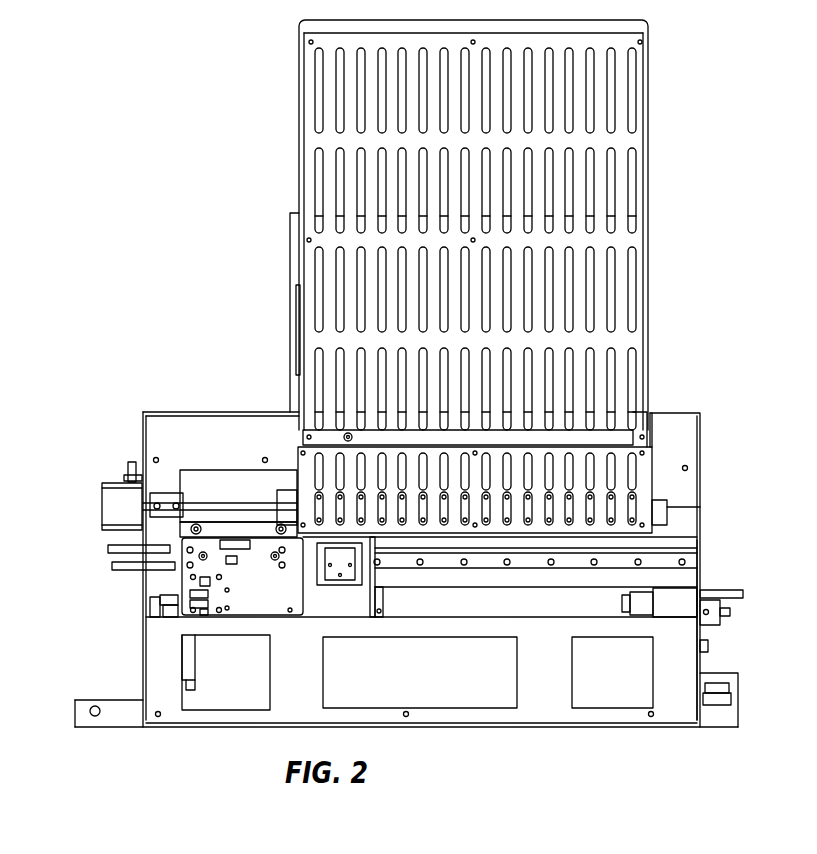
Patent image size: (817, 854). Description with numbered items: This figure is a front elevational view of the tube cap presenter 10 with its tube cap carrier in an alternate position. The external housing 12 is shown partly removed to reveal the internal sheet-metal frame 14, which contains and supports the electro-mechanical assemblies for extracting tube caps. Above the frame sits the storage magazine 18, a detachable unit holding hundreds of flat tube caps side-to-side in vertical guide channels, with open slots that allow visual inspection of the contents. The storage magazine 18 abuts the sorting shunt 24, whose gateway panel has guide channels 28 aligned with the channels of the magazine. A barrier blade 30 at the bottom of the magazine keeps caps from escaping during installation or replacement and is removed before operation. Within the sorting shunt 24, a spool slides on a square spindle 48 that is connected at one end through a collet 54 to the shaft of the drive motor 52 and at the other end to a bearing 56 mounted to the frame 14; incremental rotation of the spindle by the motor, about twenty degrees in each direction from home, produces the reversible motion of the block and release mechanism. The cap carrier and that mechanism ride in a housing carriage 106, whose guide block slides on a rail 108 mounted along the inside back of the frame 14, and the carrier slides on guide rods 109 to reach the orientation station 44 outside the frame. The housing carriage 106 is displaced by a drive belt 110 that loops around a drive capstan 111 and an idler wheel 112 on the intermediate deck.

The tube cap presenter 10 is at (203, 410).
The external housing 12 is at (690, 412).
The internal sheet-metal frame 14 is at (703, 537).
The storage magazine 18 is at (650, 160).
The sorting shunt 24 is at (662, 463).
The guide channels 28 is at (633, 510).
The barrier blade 30 is at (620, 437).
The orientation station 44 is at (718, 622).
The square spindle 48 is at (190, 506).
The drive motor 52 is at (105, 483).
The collet 54 is at (166, 500).
The bearing 56 is at (705, 507).
The housing carriage 106 is at (357, 590).
The rail 108 is at (700, 568).
The guide rods 109 is at (112, 565).
The drive belt 110 is at (162, 612).
The drive capstan 111 is at (165, 594).
The idler wheel 112 is at (626, 592).